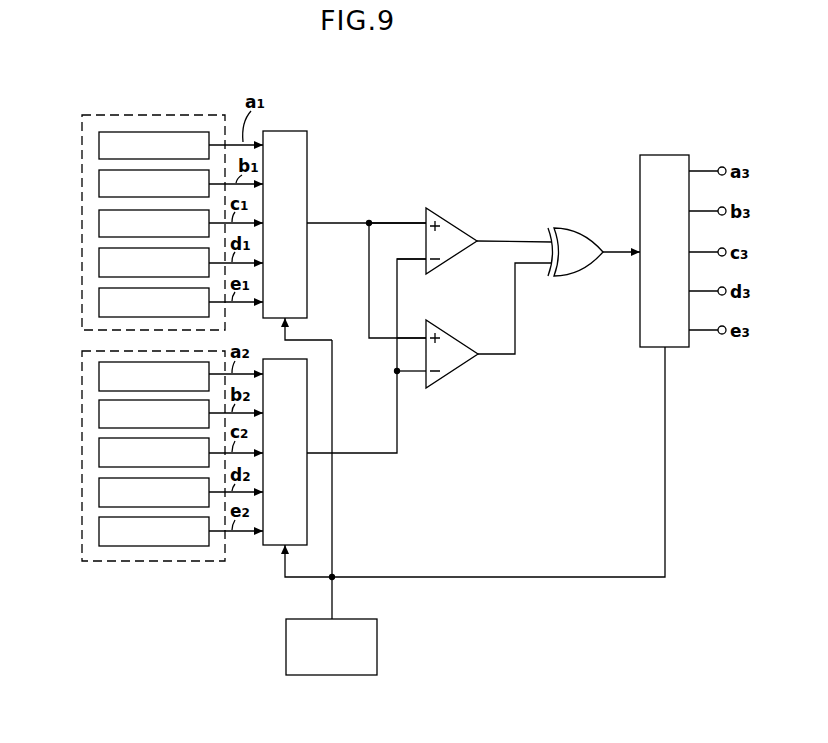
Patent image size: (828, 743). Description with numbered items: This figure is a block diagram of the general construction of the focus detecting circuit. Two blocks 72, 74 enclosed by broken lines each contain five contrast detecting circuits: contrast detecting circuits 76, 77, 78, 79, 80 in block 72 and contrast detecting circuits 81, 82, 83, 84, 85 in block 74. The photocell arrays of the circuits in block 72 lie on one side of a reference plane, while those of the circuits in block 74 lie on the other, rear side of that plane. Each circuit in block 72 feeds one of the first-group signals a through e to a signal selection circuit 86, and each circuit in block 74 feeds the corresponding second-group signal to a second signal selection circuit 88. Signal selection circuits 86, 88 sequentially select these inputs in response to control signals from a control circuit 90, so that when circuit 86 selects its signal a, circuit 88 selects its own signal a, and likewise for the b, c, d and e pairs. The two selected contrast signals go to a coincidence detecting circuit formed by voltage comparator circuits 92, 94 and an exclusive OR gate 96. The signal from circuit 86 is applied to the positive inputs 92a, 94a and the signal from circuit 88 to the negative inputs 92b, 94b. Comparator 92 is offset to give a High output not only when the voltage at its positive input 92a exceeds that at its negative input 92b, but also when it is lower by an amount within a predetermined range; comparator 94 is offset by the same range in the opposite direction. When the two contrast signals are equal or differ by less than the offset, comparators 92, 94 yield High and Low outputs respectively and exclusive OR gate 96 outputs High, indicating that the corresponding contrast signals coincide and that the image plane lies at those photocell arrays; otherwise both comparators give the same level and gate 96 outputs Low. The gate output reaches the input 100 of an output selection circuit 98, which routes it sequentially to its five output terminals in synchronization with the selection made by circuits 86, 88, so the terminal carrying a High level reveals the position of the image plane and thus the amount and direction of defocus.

The block 72 is at (139, 115).
The block 74 is at (143, 562).
The contrast detecting circuit 76 is at (99, 148).
The contrast detecting circuit 77 is at (99, 184).
The contrast detecting circuit 78 is at (99, 224).
The contrast detecting circuit 79 is at (99, 263).
The contrast detecting circuit 80 is at (99, 302).
The contrast detecting circuit 81 is at (99, 374).
The contrast detecting circuit 82 is at (99, 414).
The contrast detecting circuit 83 is at (99, 453).
The contrast detecting circuit 84 is at (99, 493).
The contrast detecting circuit 85 is at (99, 532).
The signal selection circuit 86 is at (307, 170).
The signal selection circuit 88 is at (263, 548).
The control circuit 90 is at (377, 645).
The voltage comparator circuit 92 is at (455, 219).
The positive input 92a is at (398, 221).
The negative input 92b is at (408, 262).
The voltage comparator circuit 94 is at (463, 336).
The positive input 94a is at (415, 338).
The negative input 94b is at (413, 372).
The exclusive OR gate 96 is at (568, 227).
The output selection circuit 98 is at (667, 155).
The input 100 is at (609, 255).